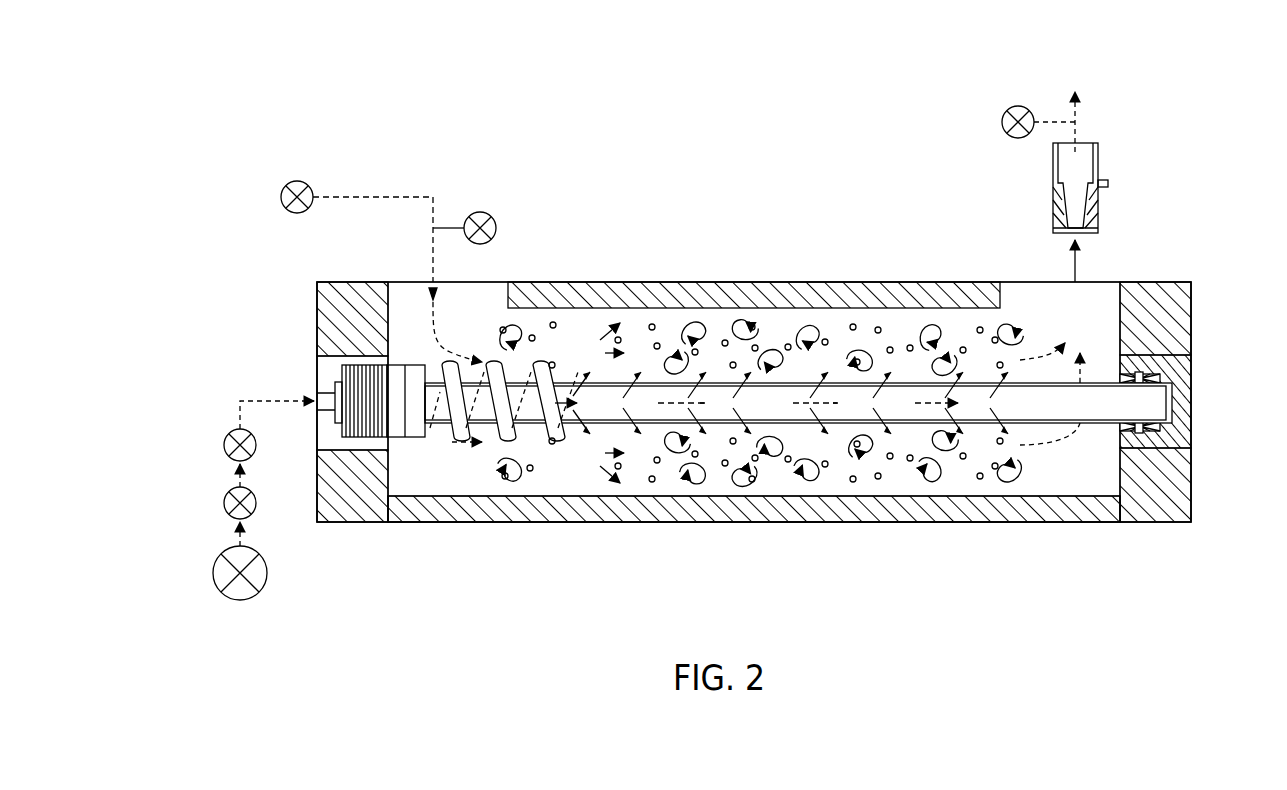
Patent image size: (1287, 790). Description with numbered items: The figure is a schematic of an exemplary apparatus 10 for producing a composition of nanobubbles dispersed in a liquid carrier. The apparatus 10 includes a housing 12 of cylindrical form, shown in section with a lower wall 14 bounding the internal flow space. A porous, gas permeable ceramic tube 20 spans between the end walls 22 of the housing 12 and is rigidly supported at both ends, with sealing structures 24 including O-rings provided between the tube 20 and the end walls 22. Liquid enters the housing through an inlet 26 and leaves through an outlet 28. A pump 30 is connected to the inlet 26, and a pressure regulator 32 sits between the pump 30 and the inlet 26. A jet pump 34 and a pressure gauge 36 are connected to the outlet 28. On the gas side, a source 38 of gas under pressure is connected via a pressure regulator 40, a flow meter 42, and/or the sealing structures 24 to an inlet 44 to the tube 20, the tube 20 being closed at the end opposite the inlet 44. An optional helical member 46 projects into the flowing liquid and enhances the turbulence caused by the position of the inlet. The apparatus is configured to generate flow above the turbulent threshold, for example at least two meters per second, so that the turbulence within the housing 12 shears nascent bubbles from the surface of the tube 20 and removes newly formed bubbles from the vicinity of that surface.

The apparatus 10 is at (820, 565).
The housing 12 is at (748, 278).
The chamber wall 14 is at (978, 492).
The ceramic tube 20 is at (587, 423).
The end walls 22 is at (347, 282).
The sealing structures 24 is at (316, 365).
The inlet 26 is at (435, 311).
The outlet 28 is at (1077, 315).
The pump 30 is at (295, 182).
The pressure regulator 32 is at (478, 212).
The jet pump 34 is at (1053, 210).
The pressure gauge 36 is at (1015, 106).
The source of gas under pressure 38 is at (213, 573).
The pressure regulator 40 is at (224, 503).
The flow meter 42 is at (224, 445).
The inlet 44 is at (316, 395).
The helical member 46 is at (464, 437).